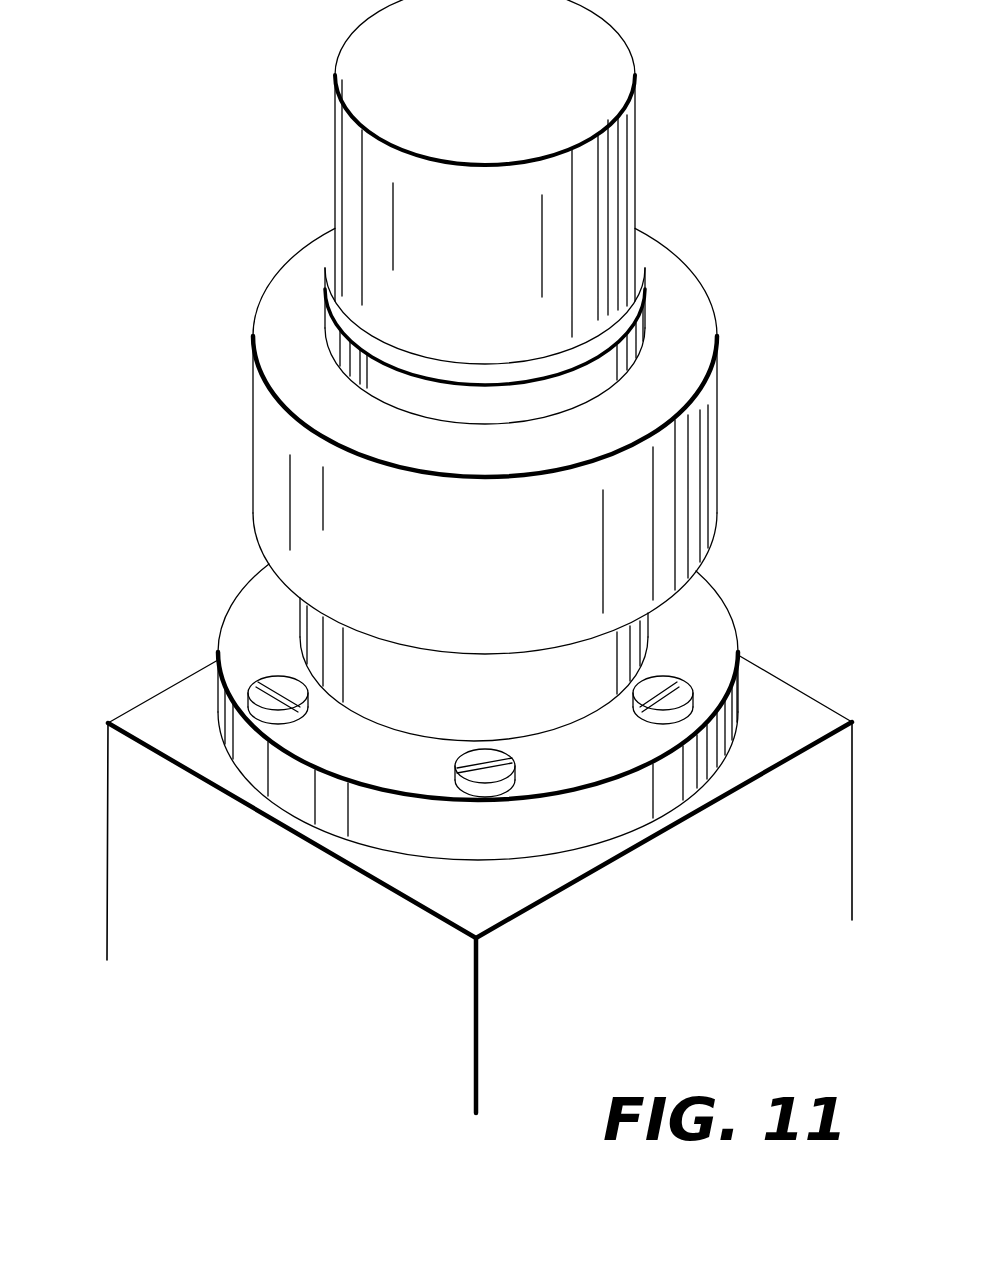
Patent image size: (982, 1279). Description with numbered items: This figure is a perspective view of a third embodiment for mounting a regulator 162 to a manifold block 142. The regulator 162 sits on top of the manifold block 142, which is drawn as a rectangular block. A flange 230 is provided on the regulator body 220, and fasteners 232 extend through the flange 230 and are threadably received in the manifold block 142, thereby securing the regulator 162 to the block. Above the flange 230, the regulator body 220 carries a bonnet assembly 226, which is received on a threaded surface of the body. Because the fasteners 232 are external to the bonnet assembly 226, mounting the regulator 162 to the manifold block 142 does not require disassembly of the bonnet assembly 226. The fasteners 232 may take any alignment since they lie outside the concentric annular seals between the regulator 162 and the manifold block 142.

The manifold block 142 is at (140, 881).
The regulator 162 is at (655, 214).
The regulator body 220 is at (375, 692).
The bonnet assembly 226 is at (275, 497).
The flange 230 is at (742, 612).
The fasteners 232 is at (704, 681).